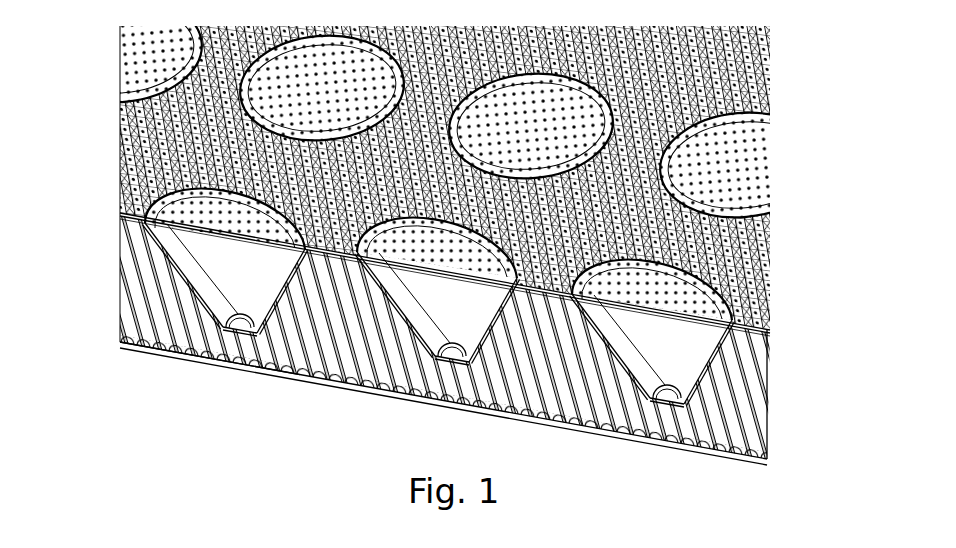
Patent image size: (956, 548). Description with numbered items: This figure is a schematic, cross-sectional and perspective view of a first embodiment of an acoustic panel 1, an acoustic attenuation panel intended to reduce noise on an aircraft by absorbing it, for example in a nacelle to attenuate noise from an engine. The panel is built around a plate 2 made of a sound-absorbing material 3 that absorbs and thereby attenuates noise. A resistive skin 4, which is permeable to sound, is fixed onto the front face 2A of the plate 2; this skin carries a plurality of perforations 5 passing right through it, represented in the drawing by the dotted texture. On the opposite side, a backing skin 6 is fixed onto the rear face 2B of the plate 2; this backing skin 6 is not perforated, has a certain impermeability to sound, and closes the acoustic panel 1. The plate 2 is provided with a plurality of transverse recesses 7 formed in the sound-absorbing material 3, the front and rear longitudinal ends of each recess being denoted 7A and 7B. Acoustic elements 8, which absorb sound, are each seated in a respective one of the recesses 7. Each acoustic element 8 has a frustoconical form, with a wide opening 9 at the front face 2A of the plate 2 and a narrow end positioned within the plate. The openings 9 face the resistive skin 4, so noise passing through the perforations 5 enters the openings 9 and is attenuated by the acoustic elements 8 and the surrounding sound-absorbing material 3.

The acoustic panel 1 is at (450, 256).
The plate 2 is at (448, 359).
The front face of the plate 2A is at (771, 317).
The rear face of the plate 2B is at (772, 466).
The sound-absorbing material 3 is at (155, 292).
The resistive skin 4 is at (125, 212).
The perforations 5 is at (170, 122).
The backing skin 6 is at (573, 427).
The transverse recesses 7 is at (439, 323).
The front longitudinal end of the recess 7A is at (110, 230).
The rear longitudinal end of the recess 7B is at (198, 336).
The acoustic elements 8 is at (205, 300).
The opening of the acoustic element 9 is at (705, 284).